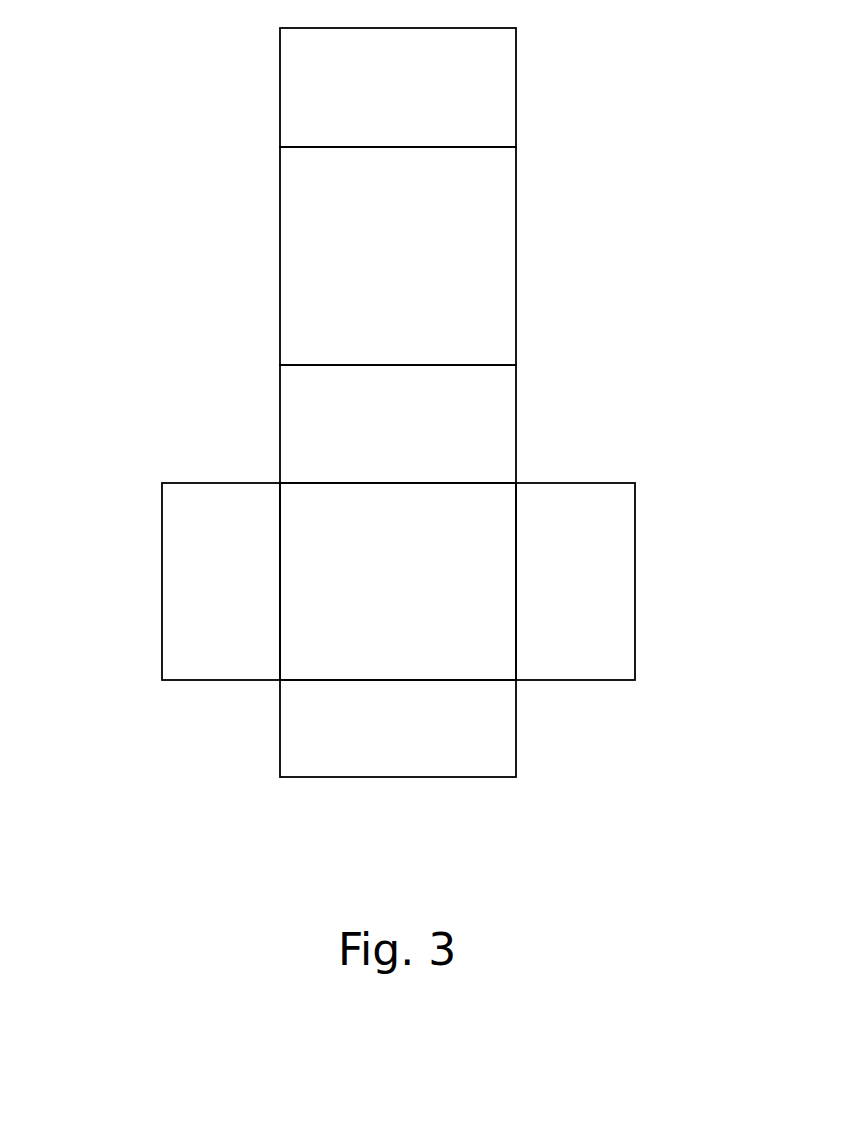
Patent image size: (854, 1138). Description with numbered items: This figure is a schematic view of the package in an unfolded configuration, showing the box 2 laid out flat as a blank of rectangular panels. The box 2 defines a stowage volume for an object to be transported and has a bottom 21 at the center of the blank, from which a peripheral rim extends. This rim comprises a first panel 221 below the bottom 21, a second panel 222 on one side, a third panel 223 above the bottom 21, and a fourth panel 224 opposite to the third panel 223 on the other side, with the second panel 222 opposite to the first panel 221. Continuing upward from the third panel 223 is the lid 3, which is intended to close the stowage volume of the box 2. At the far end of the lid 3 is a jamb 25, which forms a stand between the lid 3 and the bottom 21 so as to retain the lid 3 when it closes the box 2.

The box 2 is at (399, 452).
The lid 3 is at (490, 245).
The bottom 21 is at (338, 645).
The jamb 25 is at (492, 78).
The first panel 221 is at (398, 762).
The second panel 222 is at (608, 582).
The third panel 223 is at (490, 407).
The fourth panel 224 is at (182, 582).